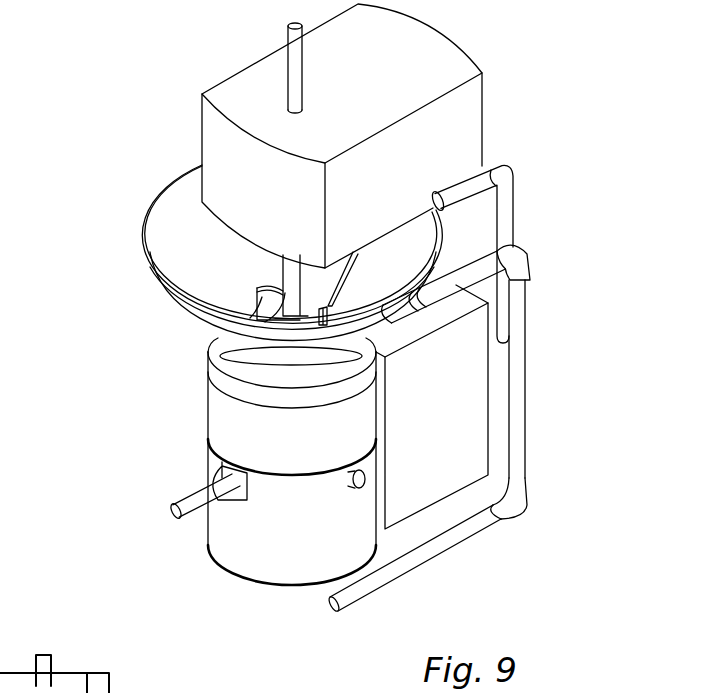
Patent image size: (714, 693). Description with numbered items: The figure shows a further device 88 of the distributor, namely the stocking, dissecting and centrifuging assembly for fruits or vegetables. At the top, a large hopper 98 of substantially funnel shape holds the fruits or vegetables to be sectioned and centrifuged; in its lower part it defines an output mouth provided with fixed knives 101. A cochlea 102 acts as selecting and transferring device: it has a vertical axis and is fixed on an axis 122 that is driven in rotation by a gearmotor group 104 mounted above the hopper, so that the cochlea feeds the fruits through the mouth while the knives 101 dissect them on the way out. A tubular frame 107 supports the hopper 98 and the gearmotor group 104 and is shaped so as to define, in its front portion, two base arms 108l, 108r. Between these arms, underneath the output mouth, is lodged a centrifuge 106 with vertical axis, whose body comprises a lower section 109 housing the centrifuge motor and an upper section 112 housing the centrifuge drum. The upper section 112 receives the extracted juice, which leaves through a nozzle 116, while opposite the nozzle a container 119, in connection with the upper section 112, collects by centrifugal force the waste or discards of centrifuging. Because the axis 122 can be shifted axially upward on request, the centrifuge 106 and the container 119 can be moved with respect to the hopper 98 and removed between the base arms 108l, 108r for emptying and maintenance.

The mixing system 88 is at (275, 181).
The gearmotor group 104 is at (284, 56).
The axis 122 is at (299, 91).
The hopper 98 is at (86, 178).
The cochlea 102 is at (266, 302).
The fixed knives 101 is at (252, 314).
The tubular frame 107 is at (516, 259).
The container 119 is at (482, 412).
The centrifuge 106 is at (247, 476).
The upper section 112 is at (213, 398).
The lower section 109 is at (221, 545).
The nozzle 116 is at (231, 490).
The left base arm 108l is at (172, 506).
The right base arm 108r is at (465, 529).